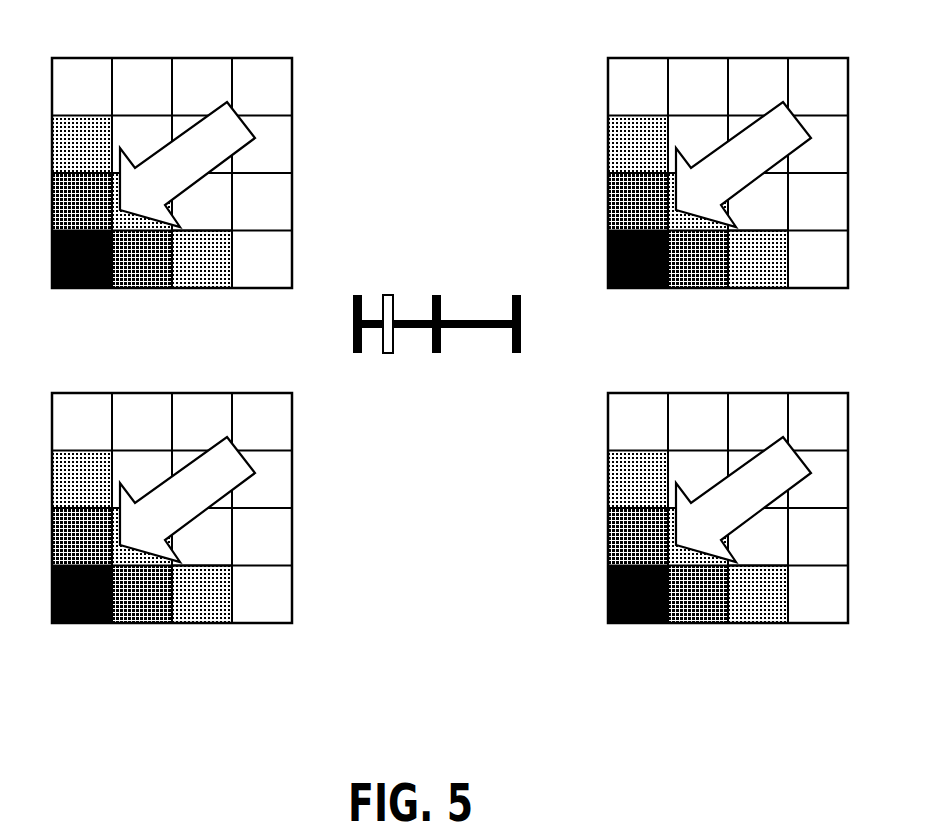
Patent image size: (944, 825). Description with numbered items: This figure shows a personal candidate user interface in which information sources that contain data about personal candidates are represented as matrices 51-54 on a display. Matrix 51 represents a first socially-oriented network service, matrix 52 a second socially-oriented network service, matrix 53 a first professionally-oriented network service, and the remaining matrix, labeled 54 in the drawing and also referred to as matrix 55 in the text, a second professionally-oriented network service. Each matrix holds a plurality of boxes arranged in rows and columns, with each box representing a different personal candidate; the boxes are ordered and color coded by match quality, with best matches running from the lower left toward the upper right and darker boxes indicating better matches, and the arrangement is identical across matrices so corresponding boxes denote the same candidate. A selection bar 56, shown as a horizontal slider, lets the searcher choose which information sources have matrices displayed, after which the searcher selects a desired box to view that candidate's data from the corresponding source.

The matrix 51 is at (188, 201).
The matrix 52 is at (189, 539).
The matrix 53 is at (705, 193).
The matrix 54 is at (704, 517).
The matrix 55 is at (444, 390).
The selection bar 56 is at (458, 330).